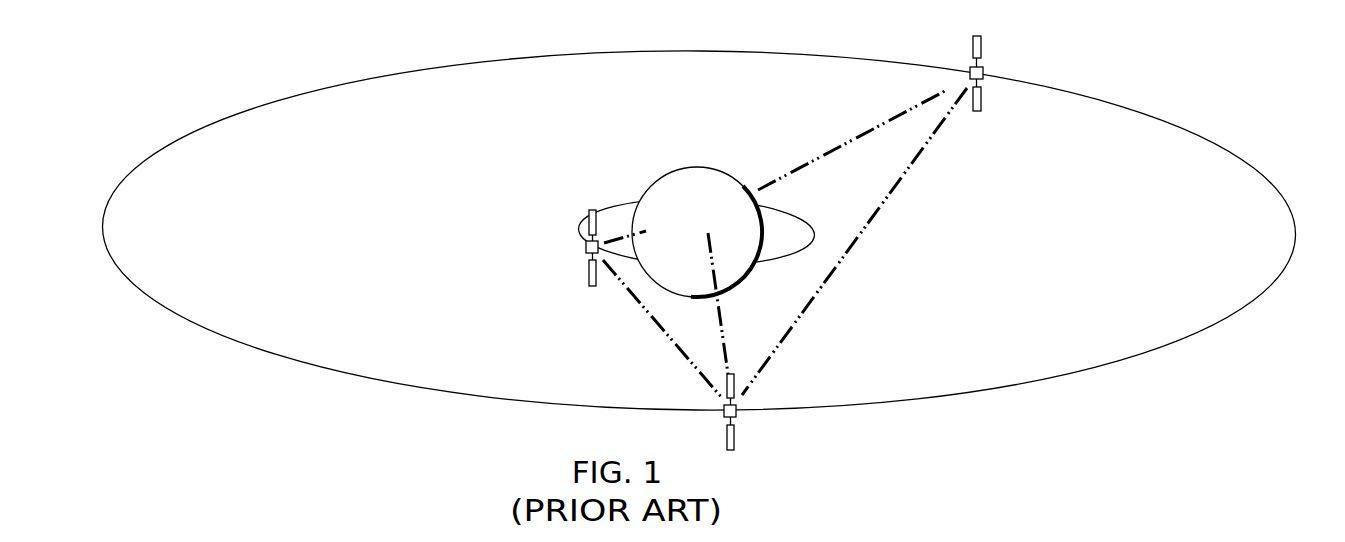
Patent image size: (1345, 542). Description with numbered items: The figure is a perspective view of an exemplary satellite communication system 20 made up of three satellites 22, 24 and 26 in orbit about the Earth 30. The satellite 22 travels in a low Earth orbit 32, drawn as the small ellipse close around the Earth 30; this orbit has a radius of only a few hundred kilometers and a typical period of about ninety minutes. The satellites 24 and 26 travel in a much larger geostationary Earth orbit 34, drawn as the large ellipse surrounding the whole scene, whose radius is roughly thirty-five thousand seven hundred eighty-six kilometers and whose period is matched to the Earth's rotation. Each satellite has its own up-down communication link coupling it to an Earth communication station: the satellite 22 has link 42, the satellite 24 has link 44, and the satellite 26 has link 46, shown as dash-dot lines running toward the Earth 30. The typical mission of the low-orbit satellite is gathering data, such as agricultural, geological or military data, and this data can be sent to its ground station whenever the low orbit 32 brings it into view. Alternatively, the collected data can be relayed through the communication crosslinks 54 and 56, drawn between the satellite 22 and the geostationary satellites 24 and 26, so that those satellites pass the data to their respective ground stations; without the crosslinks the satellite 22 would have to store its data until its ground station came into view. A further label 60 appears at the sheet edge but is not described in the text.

The satellite communication system 20 is at (721, 289).
The satellite 22 is at (585, 248).
The satellite 24 is at (737, 413).
The satellite 26 is at (984, 71).
The Earth 30 is at (680, 170).
The low Earth orbit 32 is at (611, 204).
The geostationary Earth orbit 34 is at (1063, 93).
The up-down communication link 42 is at (620, 236).
The up-down communication link 44 is at (723, 303).
The up-down communication link 46 is at (851, 140).
The communication crosslink 54 is at (662, 329).
The communication crosslink 56 is at (854, 241).
The ground station 60 is at (1203, 541).